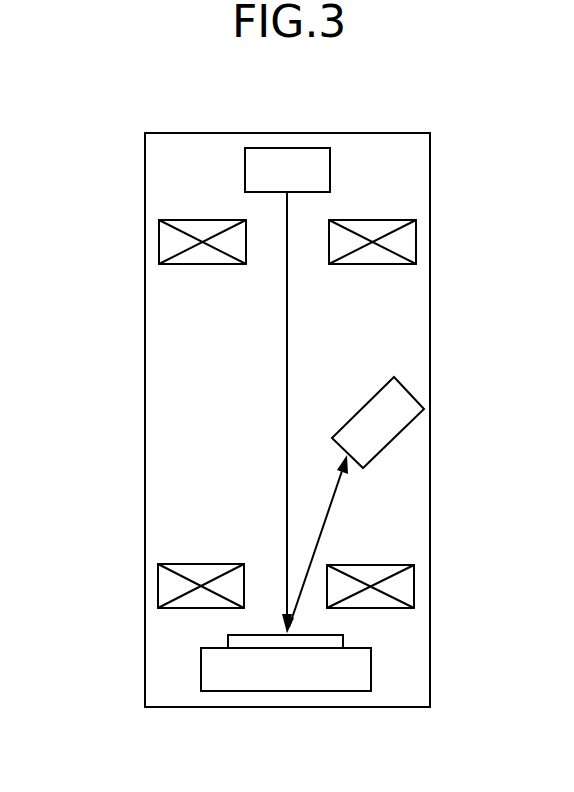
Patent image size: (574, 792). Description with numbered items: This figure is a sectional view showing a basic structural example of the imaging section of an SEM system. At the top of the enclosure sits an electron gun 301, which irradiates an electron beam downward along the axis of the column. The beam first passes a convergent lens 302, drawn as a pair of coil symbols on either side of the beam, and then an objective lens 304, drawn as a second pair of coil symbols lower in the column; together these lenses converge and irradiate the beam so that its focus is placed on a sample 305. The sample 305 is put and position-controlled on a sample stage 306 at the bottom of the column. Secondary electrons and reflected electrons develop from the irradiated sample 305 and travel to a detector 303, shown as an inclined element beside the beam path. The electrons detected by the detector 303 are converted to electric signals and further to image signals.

The electron gun 301 is at (289, 148).
The convergent lens 302 is at (159, 240).
The detector 303 is at (395, 437).
The objective lens 304 is at (158, 583).
The sample 305 is at (343, 638).
The sample stage 306 is at (201, 668).